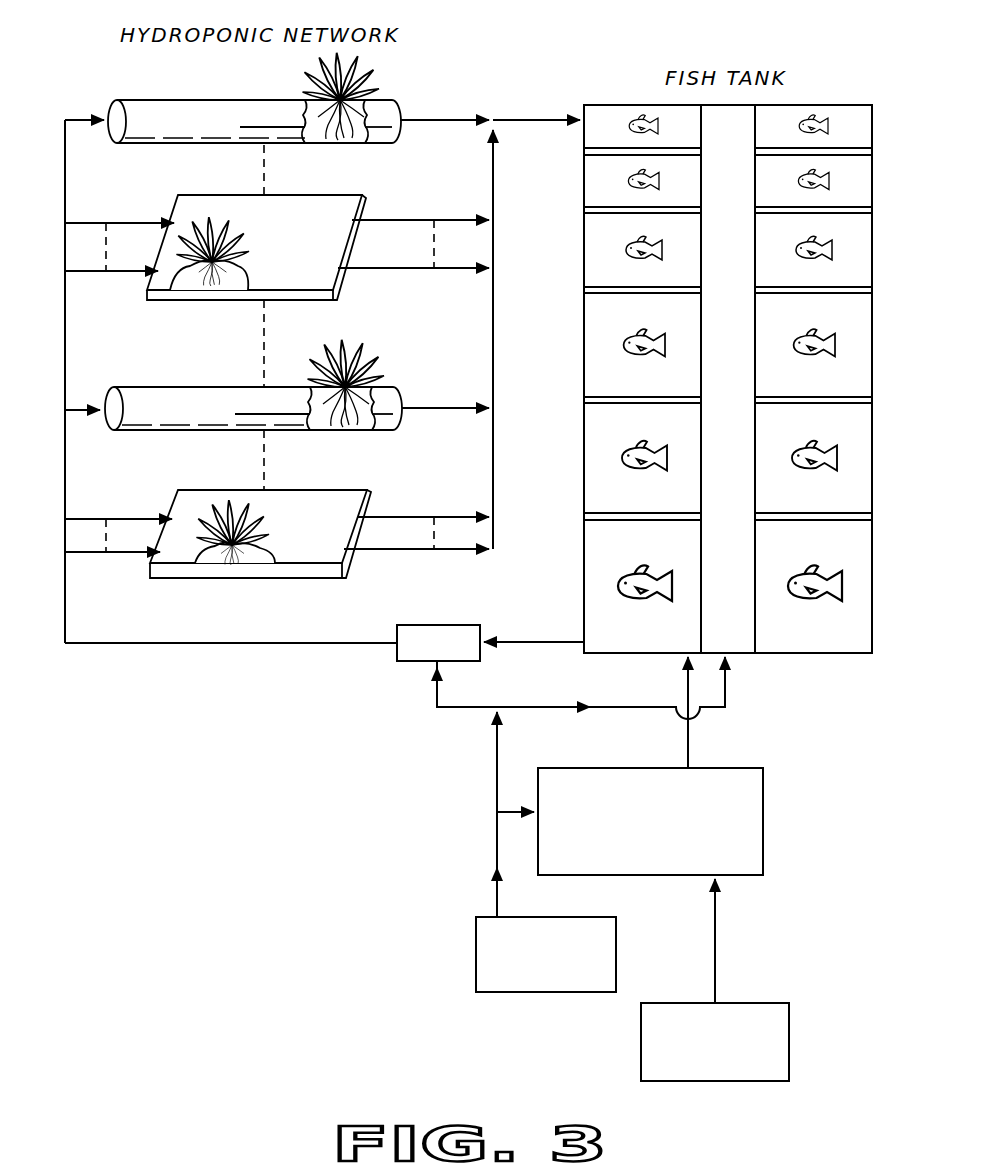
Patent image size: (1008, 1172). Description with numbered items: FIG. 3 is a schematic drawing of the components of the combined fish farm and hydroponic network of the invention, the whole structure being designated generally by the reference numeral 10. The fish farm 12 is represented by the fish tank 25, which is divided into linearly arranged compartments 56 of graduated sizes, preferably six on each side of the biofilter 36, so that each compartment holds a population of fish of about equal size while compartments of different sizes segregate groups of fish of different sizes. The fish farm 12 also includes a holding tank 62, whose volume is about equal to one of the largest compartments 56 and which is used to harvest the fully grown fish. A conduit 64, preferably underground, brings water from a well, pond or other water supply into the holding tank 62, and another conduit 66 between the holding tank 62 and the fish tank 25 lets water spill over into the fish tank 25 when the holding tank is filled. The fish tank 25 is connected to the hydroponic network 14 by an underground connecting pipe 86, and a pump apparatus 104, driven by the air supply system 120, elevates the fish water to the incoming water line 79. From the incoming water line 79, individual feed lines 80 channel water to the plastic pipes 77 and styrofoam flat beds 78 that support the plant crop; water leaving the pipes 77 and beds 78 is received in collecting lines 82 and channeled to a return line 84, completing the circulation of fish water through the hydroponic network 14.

The structure 10 is at (385, 790).
The fish farm 12 is at (630, 95).
The hydroponic network 14 is at (408, 96).
The fish tank 25 is at (823, 655).
The biofilter 36 is at (737, 160).
The compartments 56 is at (852, 134).
The holding tank 62 is at (750, 806).
The conduit 64 is at (719, 944).
The conduit 66 is at (700, 755).
The plastic pipes 77 is at (138, 127).
The styrofoam flat beds 78 is at (165, 273).
The incoming water line 79 is at (212, 645).
The feed lines 80 is at (85, 271).
The collecting lines 82 is at (412, 271).
The return line 84 is at (505, 237).
The connecting pipe 86 is at (553, 640).
The pump apparatus 104 is at (440, 628).
The air supply system 120 is at (540, 993).